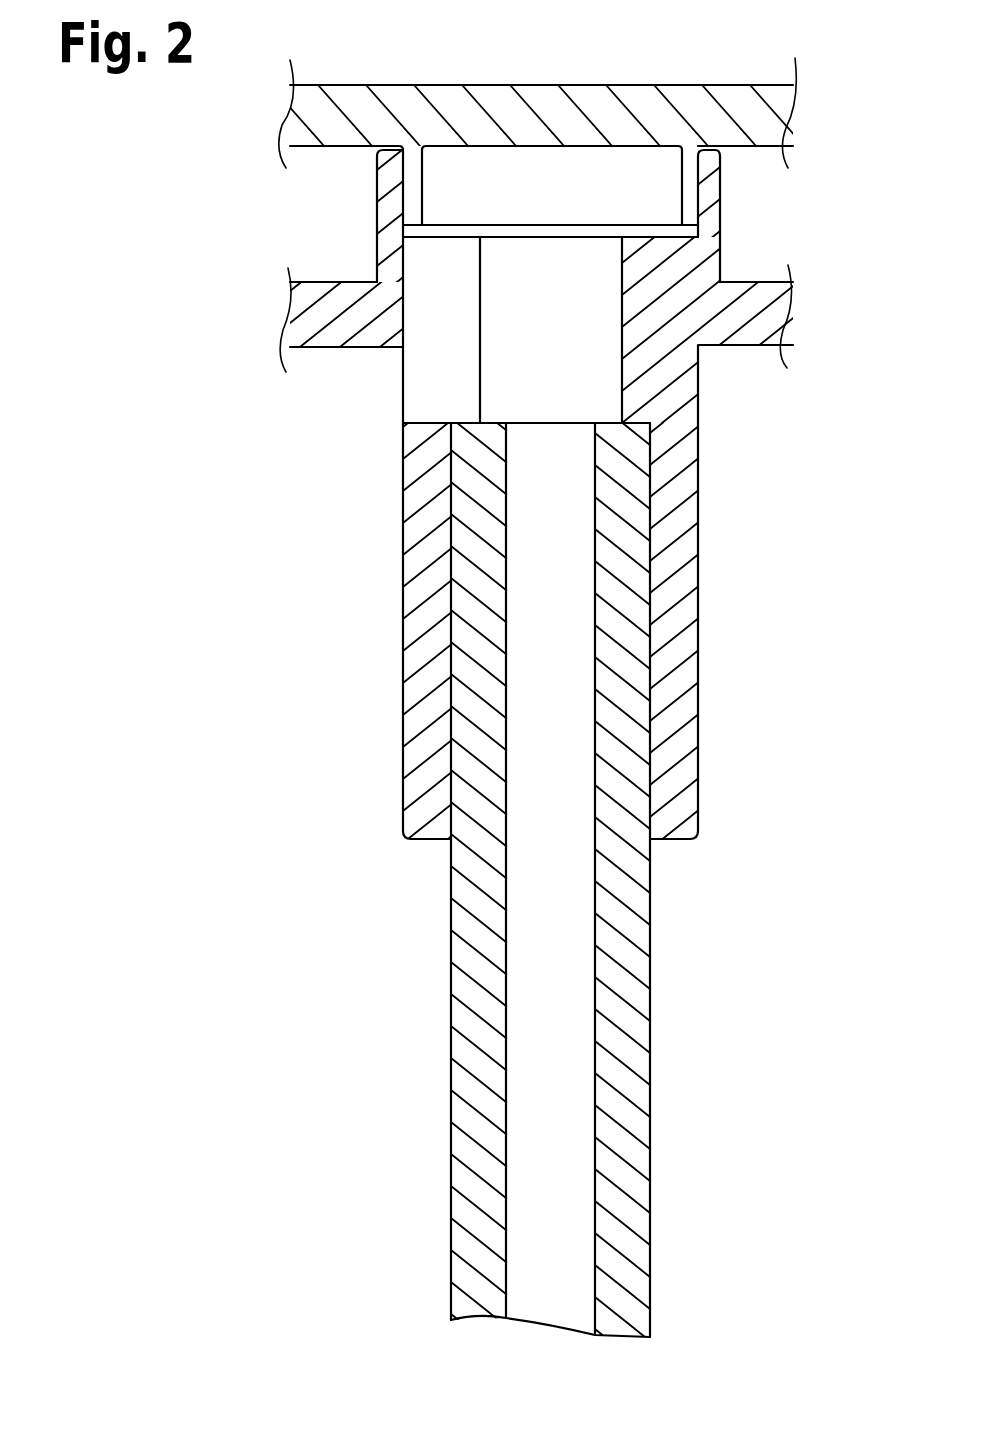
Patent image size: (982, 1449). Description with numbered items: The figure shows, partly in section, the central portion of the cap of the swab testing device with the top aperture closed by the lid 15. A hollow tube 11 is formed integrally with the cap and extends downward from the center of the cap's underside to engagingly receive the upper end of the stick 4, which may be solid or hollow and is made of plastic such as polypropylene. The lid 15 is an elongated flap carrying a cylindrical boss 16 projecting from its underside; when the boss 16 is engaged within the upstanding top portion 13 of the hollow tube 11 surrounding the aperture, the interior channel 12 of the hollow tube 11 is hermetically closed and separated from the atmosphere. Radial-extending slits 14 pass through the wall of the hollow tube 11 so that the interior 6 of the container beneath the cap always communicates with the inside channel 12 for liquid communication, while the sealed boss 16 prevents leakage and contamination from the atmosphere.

The lid 15 is at (513, 85).
The upstanding top portion 13 is at (388, 208).
The cylindrical boss 16 is at (690, 195).
The radial-extending slits 14 is at (427, 390).
The channel 12 is at (608, 378).
The hollow tube 11 is at (680, 460).
The interior 6 is at (355, 512).
The stick 4 is at (636, 933).